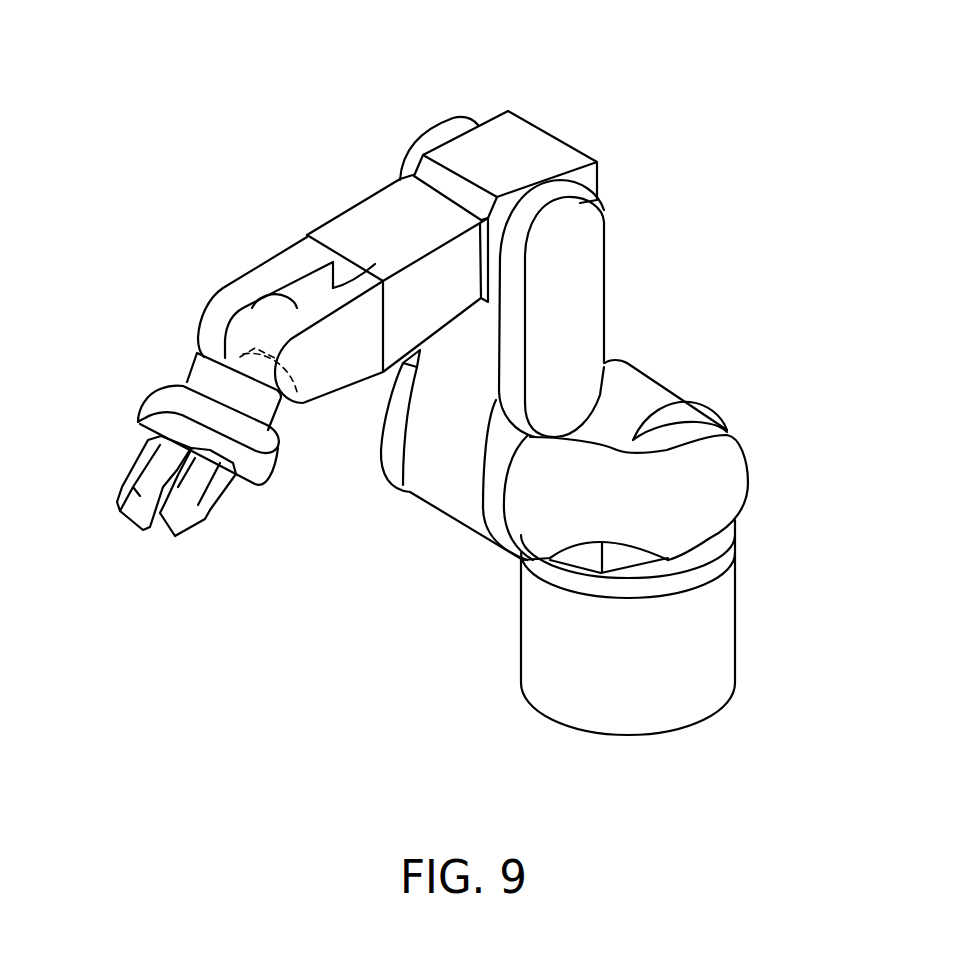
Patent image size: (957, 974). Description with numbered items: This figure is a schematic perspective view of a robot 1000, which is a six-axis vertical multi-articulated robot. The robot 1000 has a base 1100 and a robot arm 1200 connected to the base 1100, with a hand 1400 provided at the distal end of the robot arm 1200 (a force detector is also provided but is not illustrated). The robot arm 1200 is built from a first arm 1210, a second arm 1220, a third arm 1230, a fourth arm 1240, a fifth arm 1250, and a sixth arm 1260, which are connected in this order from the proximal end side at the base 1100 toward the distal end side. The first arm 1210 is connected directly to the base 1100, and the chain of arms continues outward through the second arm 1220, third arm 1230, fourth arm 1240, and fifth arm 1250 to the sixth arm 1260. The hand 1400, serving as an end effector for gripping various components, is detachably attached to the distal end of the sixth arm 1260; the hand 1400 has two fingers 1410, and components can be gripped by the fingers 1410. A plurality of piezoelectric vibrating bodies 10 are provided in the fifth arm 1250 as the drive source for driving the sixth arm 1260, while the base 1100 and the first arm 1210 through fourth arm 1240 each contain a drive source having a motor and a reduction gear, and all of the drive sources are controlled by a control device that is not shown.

The robot 1000 is at (147, 105).
The base 1100 is at (735, 637).
The robot arm 1200 is at (488, 108).
The first arm 1210 is at (720, 470).
The second arm 1220 is at (605, 292).
The third arm 1230 is at (523, 147).
The fourth arm 1240 is at (368, 228).
The fifth arm 1250 is at (260, 316).
The sixth arm 1260 is at (203, 373).
The hand 1400 is at (278, 475).
The fingers 1410 is at (127, 522).
The piezoelectric vibrating body 10 is at (297, 392).